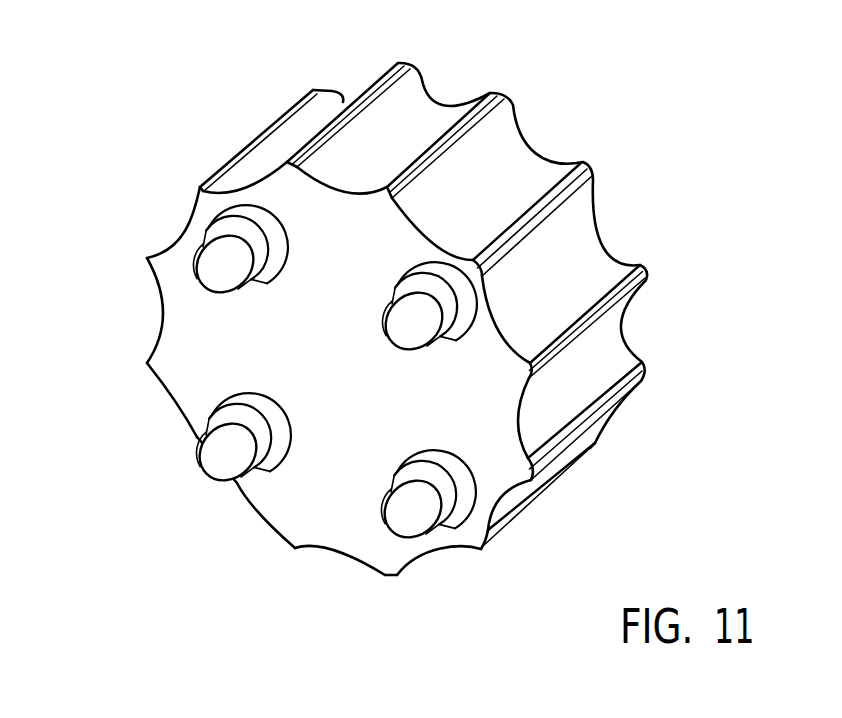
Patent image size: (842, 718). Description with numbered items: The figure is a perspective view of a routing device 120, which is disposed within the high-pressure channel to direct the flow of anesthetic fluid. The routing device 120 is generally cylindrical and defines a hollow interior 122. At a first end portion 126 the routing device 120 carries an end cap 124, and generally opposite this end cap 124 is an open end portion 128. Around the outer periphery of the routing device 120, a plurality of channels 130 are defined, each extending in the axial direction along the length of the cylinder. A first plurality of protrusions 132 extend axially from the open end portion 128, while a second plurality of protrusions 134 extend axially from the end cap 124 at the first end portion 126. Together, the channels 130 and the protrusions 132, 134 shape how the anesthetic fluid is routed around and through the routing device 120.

The routing device 120 is at (410, 349).
The hollow interior 122 is at (410, 349).
The end cap 124 is at (357, 425).
The first end portion 126 is at (284, 150).
The open end portion 128 is at (413, 52).
The channels 130 is at (633, 500).
The first plurality of protrusions 132 is at (733, 308).
The second plurality of protrusions 134 is at (290, 356).